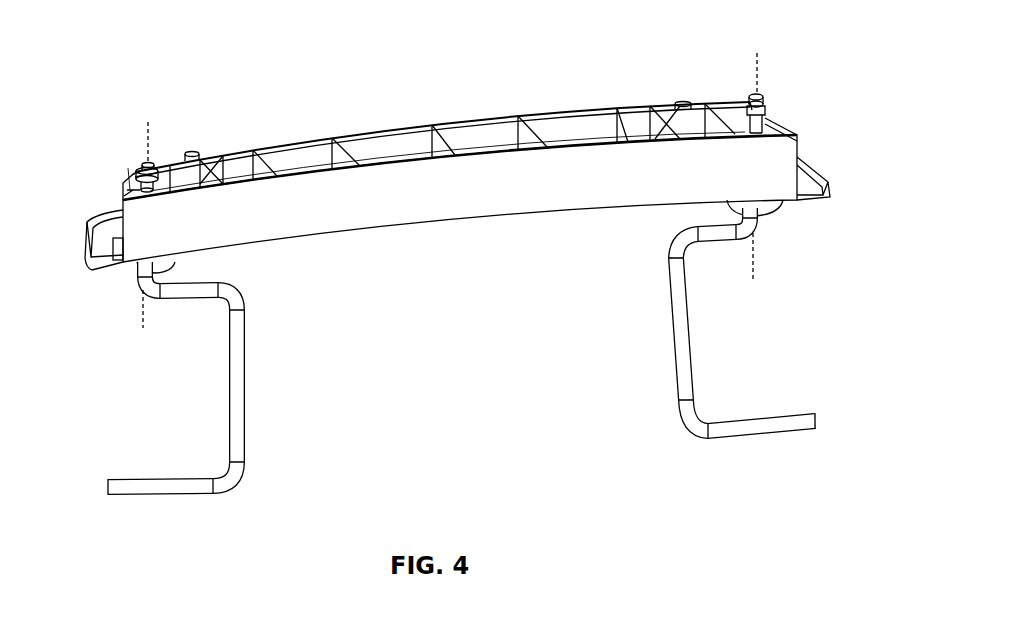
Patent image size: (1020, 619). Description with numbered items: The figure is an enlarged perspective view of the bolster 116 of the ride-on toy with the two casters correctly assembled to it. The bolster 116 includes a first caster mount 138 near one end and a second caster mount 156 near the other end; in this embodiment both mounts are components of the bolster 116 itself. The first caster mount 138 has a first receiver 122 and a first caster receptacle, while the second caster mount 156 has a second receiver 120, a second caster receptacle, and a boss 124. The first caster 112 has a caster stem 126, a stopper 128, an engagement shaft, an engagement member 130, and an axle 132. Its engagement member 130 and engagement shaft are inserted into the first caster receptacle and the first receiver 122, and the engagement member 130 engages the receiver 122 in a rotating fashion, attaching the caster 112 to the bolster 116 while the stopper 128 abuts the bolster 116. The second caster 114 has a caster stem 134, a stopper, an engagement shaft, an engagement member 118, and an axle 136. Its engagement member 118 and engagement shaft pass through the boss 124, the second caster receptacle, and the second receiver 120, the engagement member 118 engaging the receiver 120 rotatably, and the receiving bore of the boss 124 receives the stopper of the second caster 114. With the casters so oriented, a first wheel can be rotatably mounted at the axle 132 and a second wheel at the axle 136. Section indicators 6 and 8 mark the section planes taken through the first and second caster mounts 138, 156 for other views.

The first caster 112 is at (223, 378).
The second caster 114 is at (704, 323).
The bolster 116 is at (475, 213).
The engagement member 118 is at (763, 91).
The second receiver 120 is at (767, 120).
The first receiver 122 is at (139, 183).
The boss 124 is at (780, 211).
The caster stem 126 is at (245, 346).
The stopper 128 is at (167, 262).
The engagement member 130 is at (152, 160).
The axle 132 is at (152, 481).
The caster stem 134 is at (688, 360).
The axle 136 is at (750, 420).
The first caster mount 138 is at (140, 157).
The second caster mount 156 is at (753, 94).
The section line 6- 6 is at (148, 122).
The section line 8- 8 is at (757, 53).